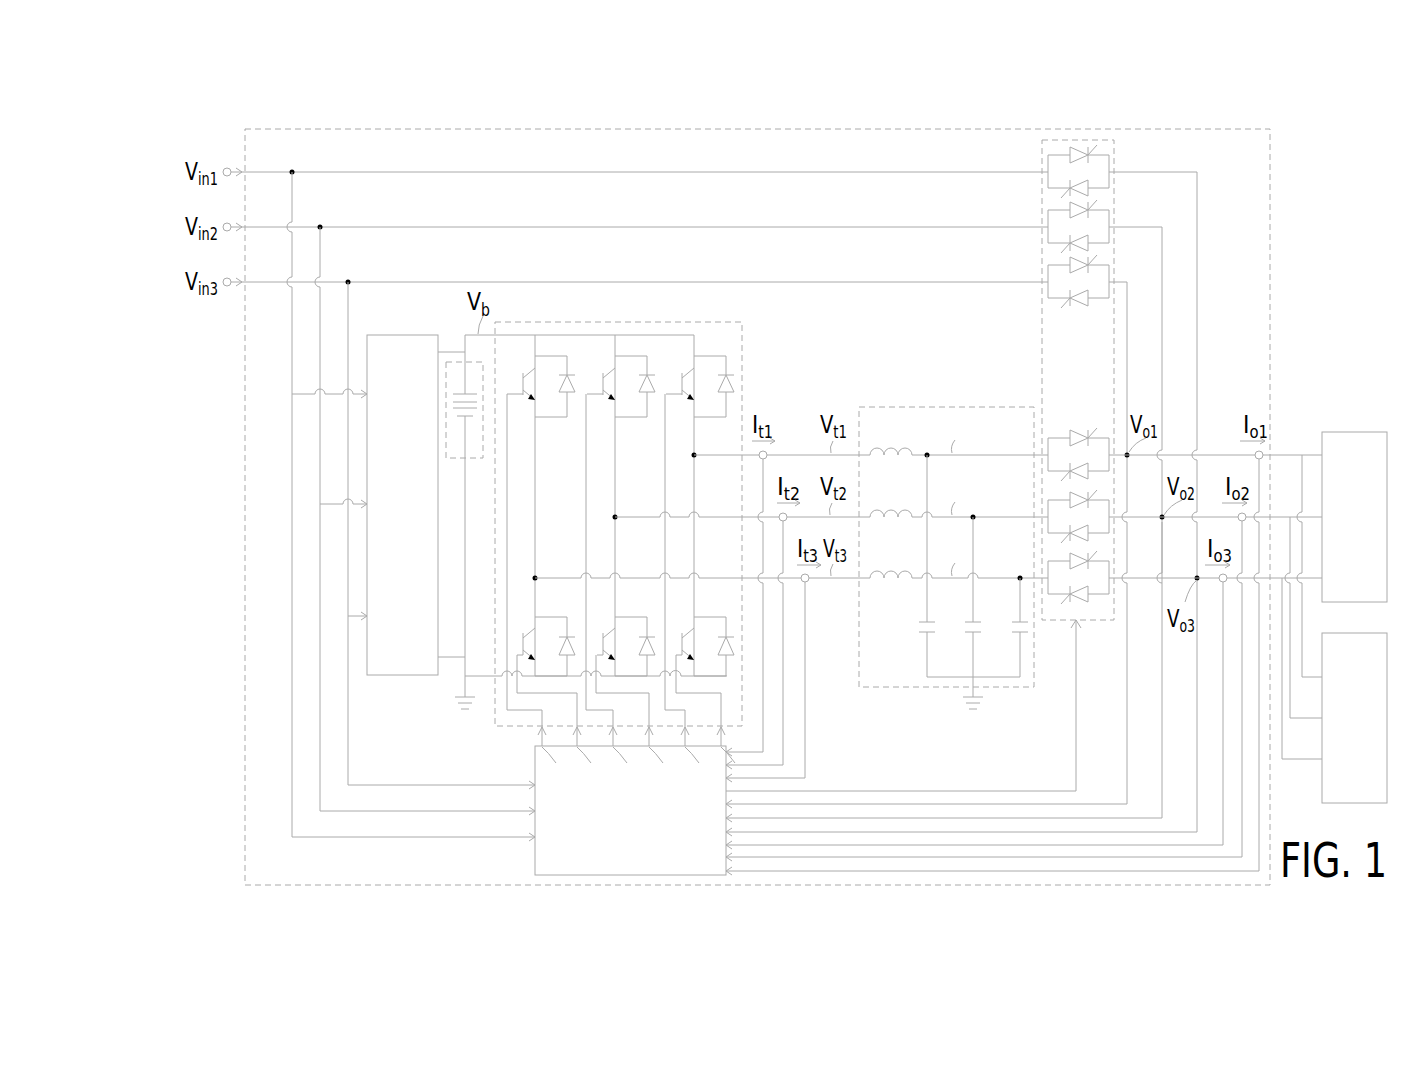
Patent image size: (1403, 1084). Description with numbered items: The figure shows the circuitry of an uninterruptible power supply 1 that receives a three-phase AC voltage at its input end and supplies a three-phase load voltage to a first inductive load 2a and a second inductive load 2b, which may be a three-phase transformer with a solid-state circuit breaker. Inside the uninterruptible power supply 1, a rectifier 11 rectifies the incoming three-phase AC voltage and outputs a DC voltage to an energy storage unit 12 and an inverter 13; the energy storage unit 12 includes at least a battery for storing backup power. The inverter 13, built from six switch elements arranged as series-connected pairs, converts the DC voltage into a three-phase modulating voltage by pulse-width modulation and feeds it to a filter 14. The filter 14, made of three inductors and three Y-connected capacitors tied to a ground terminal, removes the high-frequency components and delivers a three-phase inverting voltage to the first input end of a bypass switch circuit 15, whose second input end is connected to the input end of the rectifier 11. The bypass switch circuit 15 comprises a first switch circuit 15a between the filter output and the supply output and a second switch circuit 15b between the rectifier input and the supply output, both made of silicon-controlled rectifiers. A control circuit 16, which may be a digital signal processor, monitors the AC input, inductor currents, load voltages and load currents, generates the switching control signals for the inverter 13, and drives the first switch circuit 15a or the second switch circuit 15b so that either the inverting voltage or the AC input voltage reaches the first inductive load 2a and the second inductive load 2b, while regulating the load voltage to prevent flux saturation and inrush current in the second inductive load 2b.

The uninterruptible power supply 1 is at (1271, 174).
The first inductive load 2a is at (1365, 432).
The second inductive load 2b is at (1365, 633).
The rectifier 11 is at (396, 676).
The energy storage unit 12 is at (455, 362).
The inverter 13 is at (713, 321).
The filter 14 is at (946, 407).
The bypass switch circuit 15 is at (1099, 376).
The first switch circuit 15a is at (1080, 428).
The second switch circuit 15b is at (1080, 312).
The control circuit 16 is at (535, 752).